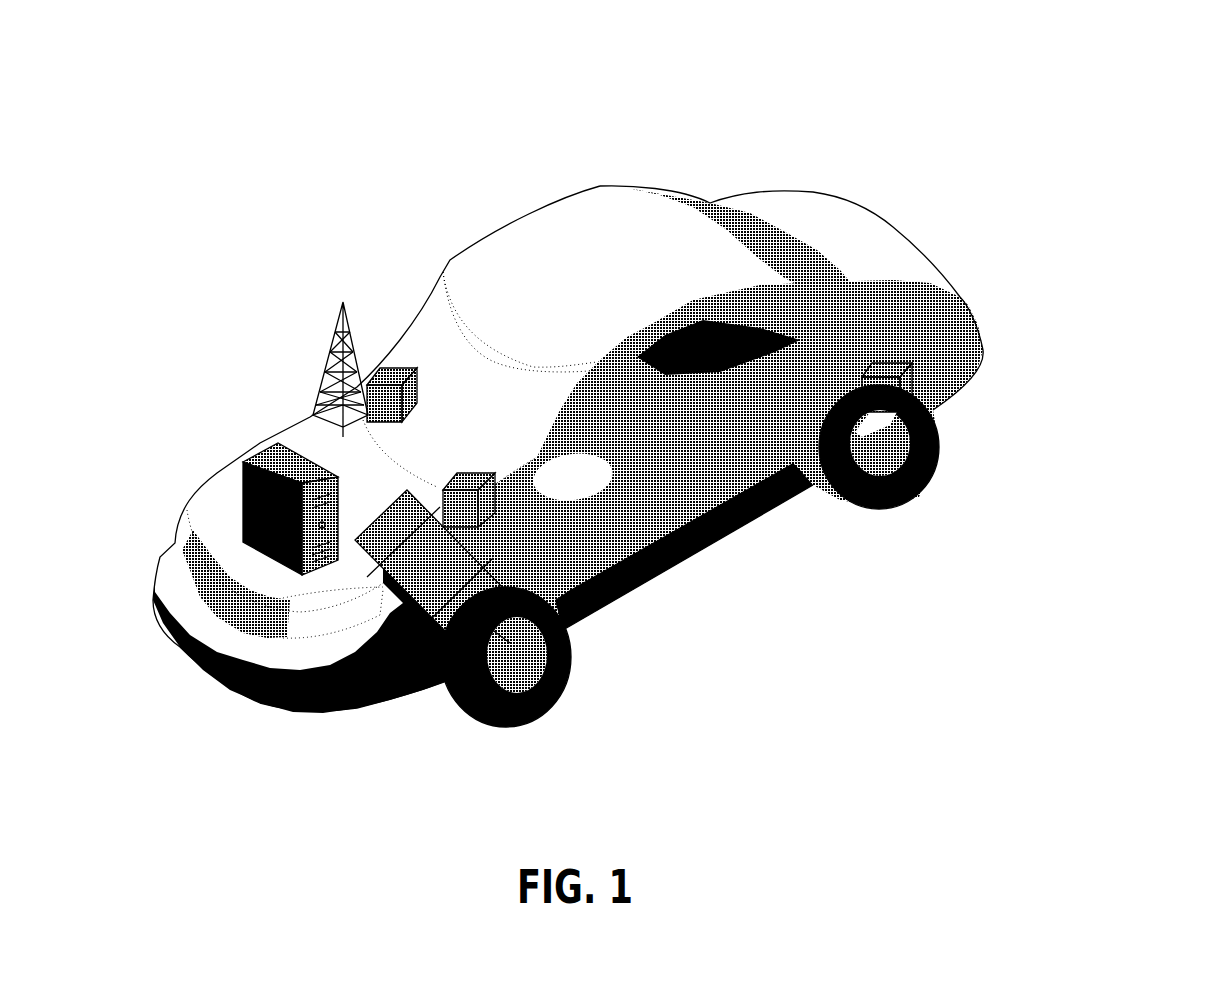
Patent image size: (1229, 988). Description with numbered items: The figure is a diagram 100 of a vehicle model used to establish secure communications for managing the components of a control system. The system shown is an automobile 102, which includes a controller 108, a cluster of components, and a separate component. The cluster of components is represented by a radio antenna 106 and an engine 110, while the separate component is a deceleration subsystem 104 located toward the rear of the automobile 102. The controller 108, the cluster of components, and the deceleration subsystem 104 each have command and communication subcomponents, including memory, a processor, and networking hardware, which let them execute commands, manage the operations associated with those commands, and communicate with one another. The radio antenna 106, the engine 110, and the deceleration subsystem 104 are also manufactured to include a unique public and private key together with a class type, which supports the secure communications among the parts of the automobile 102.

The diagram 100 is at (1089, 84).
The automobile 102 is at (586, 180).
The deceleration subsystem 104 is at (904, 352).
The radio antenna 106 is at (399, 359).
The controller 108 is at (247, 451).
The engine 110 is at (484, 466).